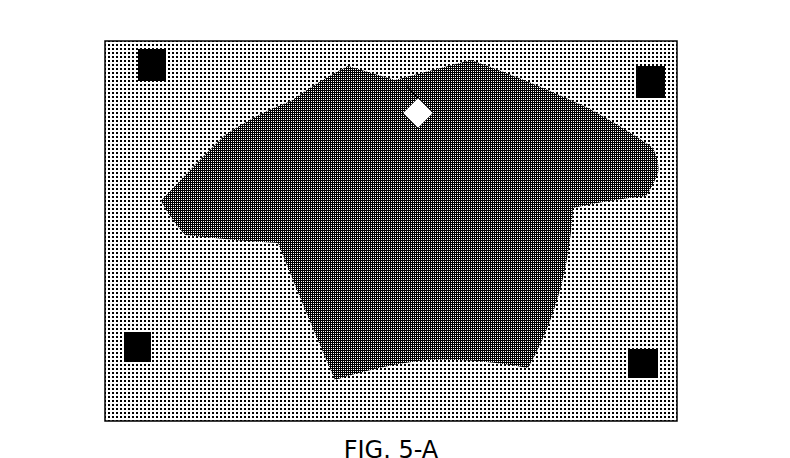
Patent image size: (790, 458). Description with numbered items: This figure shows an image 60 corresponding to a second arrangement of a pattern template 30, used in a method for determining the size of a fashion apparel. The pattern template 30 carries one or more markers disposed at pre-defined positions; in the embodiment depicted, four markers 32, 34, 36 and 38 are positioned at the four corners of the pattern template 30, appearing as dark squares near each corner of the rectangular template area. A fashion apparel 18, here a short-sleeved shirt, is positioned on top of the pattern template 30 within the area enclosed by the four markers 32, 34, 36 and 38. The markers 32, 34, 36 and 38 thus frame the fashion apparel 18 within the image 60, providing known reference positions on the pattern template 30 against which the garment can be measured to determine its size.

The pattern template 30 is at (562, 42).
The image 60 is at (78, 237).
The fashion apparel 18 is at (610, 192).
The marker 32 is at (142, 74).
The marker 34 is at (641, 90).
The marker 36 is at (644, 341).
The marker 38 is at (118, 323).